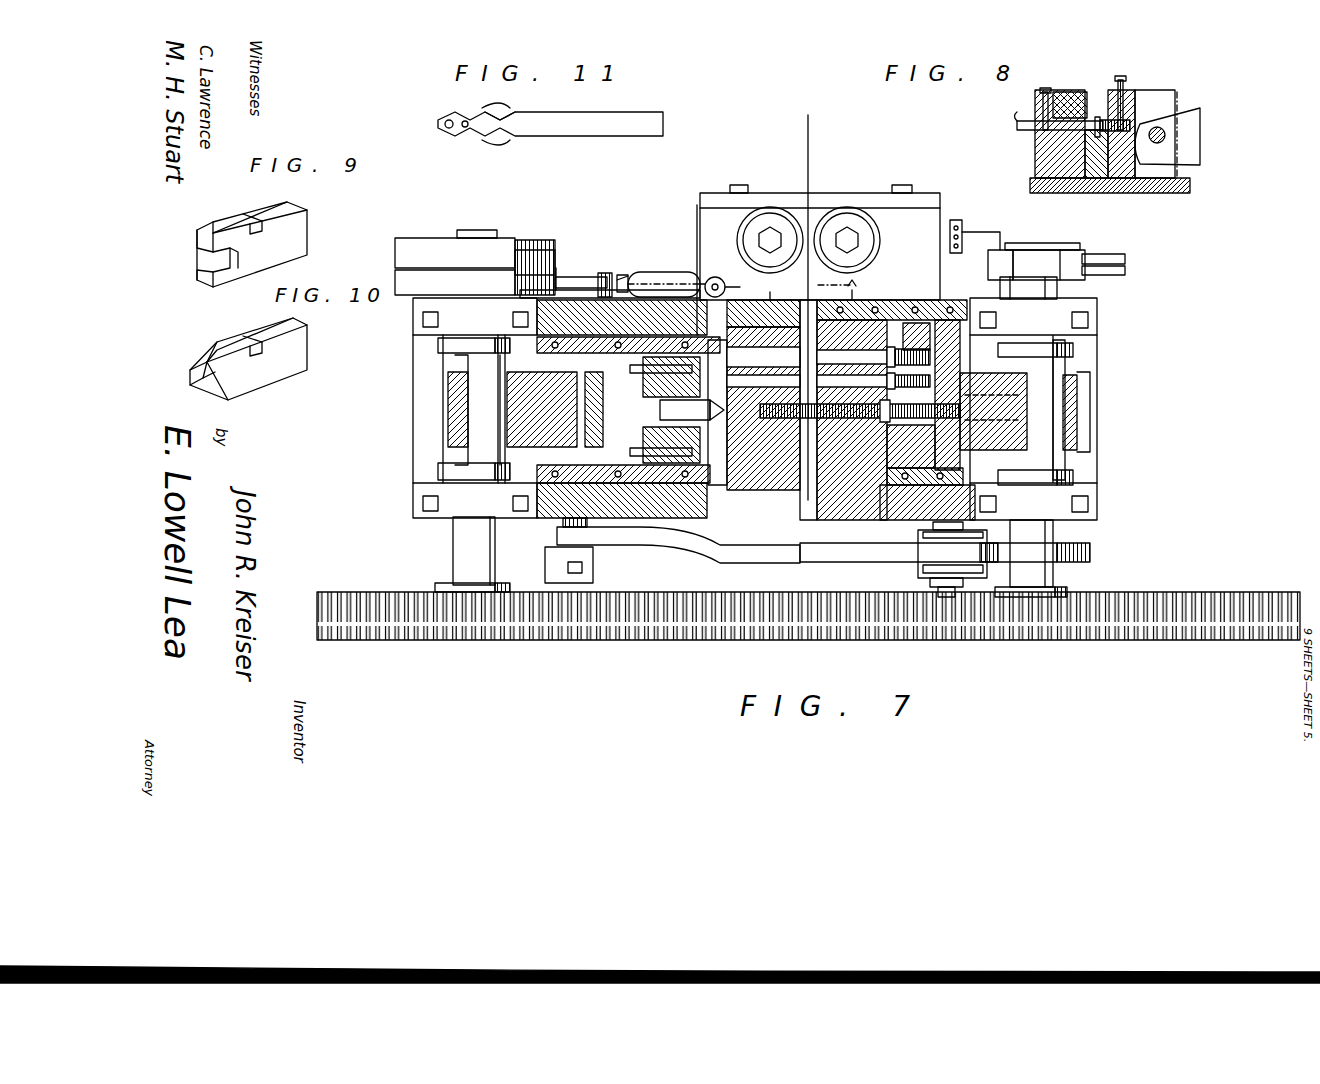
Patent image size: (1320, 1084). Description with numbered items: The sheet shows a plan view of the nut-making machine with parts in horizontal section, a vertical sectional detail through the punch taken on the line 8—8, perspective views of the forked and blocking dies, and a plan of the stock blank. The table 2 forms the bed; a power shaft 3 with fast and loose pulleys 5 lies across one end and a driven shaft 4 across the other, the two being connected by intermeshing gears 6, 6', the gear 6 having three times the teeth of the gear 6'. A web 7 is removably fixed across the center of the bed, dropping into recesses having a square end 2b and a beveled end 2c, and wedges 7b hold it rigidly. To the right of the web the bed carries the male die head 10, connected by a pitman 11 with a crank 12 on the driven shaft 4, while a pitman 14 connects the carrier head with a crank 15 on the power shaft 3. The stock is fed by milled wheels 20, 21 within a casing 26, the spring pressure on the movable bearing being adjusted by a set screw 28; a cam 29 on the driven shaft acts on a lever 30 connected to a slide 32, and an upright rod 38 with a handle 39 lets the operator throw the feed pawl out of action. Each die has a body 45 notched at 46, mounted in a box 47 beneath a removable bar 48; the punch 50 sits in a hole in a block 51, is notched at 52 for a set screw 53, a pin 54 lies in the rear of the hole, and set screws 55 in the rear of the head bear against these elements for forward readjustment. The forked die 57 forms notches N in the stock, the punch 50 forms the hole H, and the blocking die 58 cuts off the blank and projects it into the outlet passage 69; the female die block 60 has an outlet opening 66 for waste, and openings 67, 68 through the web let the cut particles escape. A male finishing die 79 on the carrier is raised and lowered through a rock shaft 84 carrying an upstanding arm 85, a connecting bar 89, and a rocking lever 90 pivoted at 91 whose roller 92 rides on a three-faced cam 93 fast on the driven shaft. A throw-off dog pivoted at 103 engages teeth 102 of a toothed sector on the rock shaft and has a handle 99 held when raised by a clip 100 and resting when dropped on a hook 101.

In FIG. 7, the table 2 is at (440, 430).
In FIG. 7, the square end of recess 2b is at (790, 500).
In FIG. 7, the beveled end of recess 2c is at (668, 525).
In FIG. 7, the power shaft 3 is at (455, 550).
In FIG. 7, the driven shaft 4 is at (1058, 578).
In FIG. 7, the fast and loose pulleys 5 is at (442, 288).
In FIG. 7, the intermeshing gear 6 is at (808, 634).
In FIG. 7, the intermeshing gear 6' is at (515, 655).
In FIG. 7, the web 7 is at (705, 500).
In FIG. 7, the wedges 7b is at (686, 256).
In FIG. 7, the section line 8 is at (982, 372).
In FIG. 7, the male die head 10 is at (915, 360).
In FIG. 8, the pitman 11 is at (1196, 135).
In FIG. 7, the pitman 11 is at (1088, 410).
In FIG. 7, the crank 12 is at (1070, 375).
In FIG. 7, the pitman 14 is at (450, 402).
In FIG. 11, the crank 15 is at (590, 138).
In FIG. 7, the crank 15 is at (811, 138).
In FIG. 7, the milled wheel 20 is at (850, 212).
In FIG. 7, the milled wheel 21 is at (764, 212).
In FIG. 7, the casing 26 is at (930, 200).
In FIG. 7, the set screw 28 is at (958, 222).
In FIG. 7, the cam 29 is at (1040, 262).
In FIG. 7, the lever 30 is at (1108, 257).
In FIG. 7, the slide 32 is at (1010, 252).
In FIG. 7, the upright rod 38 is at (743, 285).
In FIG. 7, the handle 39 is at (650, 274).
In FIG. 9, the die body 45 is at (300, 236).
In FIG. 10, the die body 45 is at (270, 380).
In FIG. 7, the die body 45 is at (880, 372).
In FIG. 9, the notch 46 is at (250, 222).
In FIG. 10, the notch 46 is at (250, 344).
In FIG. 7, the notch 46 is at (878, 348).
In FIG. 8, the box 47 is at (1035, 155).
In FIG. 7, the box 47 is at (890, 490).
In FIG. 8, the removable bar 48 is at (1072, 94).
In FIG. 8, the punch 50 is at (1020, 120).
In FIG. 7, the punch 50 is at (898, 348).
In FIG. 8, the block 51 is at (1118, 78).
In FIG. 7, the block 51 is at (1005, 396).
In FIG. 8, the notch 52 is at (1035, 130).
In FIG. 8, the set screw 53 is at (1047, 88).
In FIG. 8, the pin 54 is at (1088, 185).
In FIG. 7, the pin 54 is at (945, 322).
In FIG. 8, the set screws 55 is at (1160, 95).
In FIG. 7, the set screws 55 is at (1005, 421).
In FIG. 9, the forked die 57 is at (198, 260).
In FIG. 7, the forked die 57 is at (765, 300).
In FIG. 10, the blocking die 58 is at (190, 378).
In FIG. 7, the blocking die 58 is at (830, 500).
In FIG. 7, the block 60 is at (736, 280).
In FIG. 7, the outlet opening 66 is at (786, 640).
In FIG. 7, the opening 67 is at (704, 282).
In FIG. 7, the opening 68 is at (672, 285).
In FIG. 7, the outlet passage 69 is at (768, 420).
In FIG. 7, the male finishing die 79 is at (668, 430).
In FIG. 7, the rock shaft 84 is at (572, 276).
In FIG. 7, the upstanding arm 85 is at (545, 560).
In FIG. 7, the connecting bar 89 is at (615, 640).
In FIG. 7, the rocking lever 90 is at (968, 580).
In FIG. 7, the pivot 91 is at (945, 590).
In FIG. 7, the roller 92 is at (1030, 598).
In FIG. 7, the cam 93 is at (1060, 550).
In FIG. 7, the handle 99 is at (557, 268).
In FIG. 7, the clip 100 is at (605, 272).
In FIG. 7, the hook 101 is at (628, 282).
In FIG. 7, the teeth 102 is at (624, 275).
In FIG. 7, the pivot 103 is at (540, 262).
In FIG. 11, the hole H is at (465, 130).
In FIG. 11, the notches N is at (490, 136).